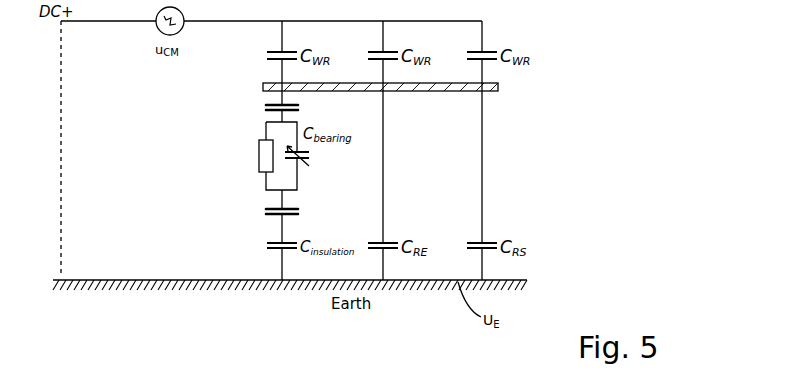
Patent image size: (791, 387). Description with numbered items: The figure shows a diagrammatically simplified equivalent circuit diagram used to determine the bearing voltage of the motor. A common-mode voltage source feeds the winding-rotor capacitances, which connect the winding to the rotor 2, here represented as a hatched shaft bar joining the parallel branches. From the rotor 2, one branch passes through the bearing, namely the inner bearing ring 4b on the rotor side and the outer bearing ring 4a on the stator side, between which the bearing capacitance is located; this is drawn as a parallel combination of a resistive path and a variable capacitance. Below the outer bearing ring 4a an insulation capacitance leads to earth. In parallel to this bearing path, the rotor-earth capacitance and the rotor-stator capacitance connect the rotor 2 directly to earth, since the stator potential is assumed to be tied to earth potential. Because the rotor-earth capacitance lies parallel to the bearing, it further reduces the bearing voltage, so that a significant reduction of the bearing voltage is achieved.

The rotor 2 is at (424, 92).
The outer bearing ring 4a is at (265, 212).
The inner bearing ring 4b is at (264, 106).